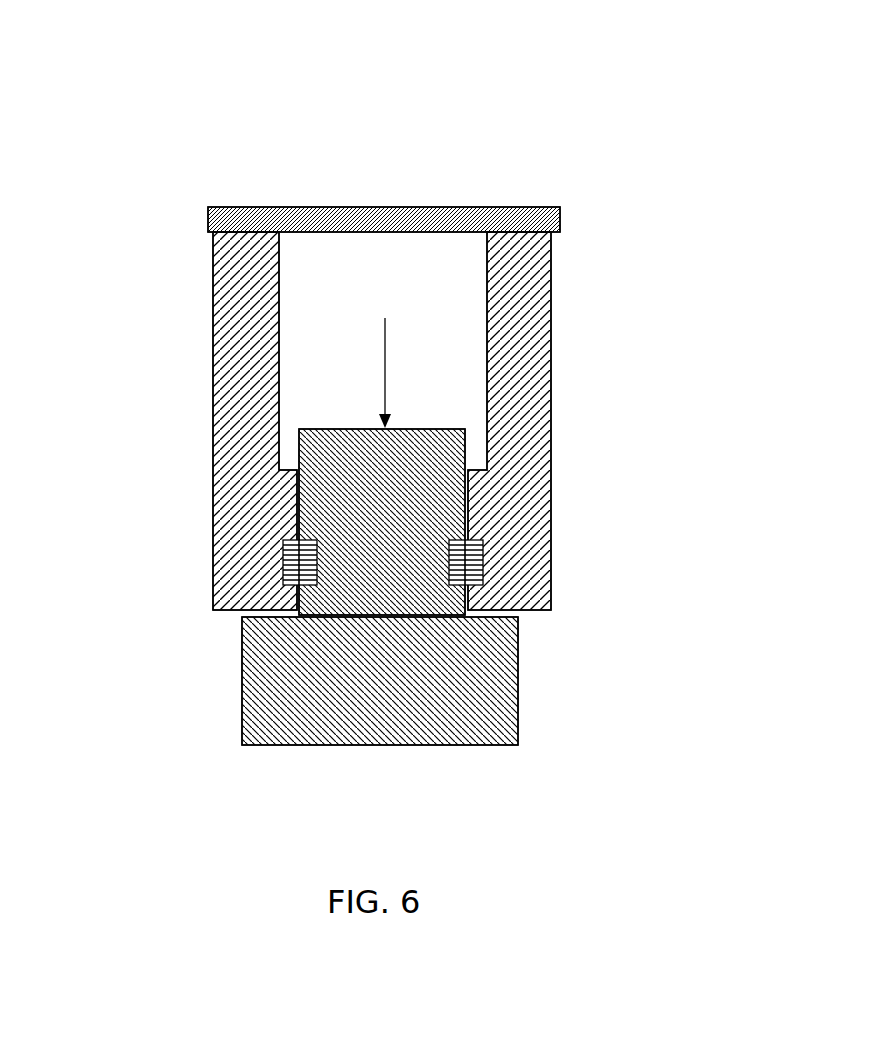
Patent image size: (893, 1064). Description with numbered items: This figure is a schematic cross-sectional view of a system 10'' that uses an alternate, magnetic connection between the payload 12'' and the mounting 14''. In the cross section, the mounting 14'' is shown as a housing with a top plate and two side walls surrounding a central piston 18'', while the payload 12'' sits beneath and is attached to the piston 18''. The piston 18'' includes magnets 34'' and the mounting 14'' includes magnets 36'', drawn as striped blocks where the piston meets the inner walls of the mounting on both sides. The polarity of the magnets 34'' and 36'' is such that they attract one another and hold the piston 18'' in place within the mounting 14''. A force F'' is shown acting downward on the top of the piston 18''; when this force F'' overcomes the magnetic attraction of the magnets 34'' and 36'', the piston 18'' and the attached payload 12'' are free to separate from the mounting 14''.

The system 10'' is at (401, 401).
The payload 12'' is at (461, 706).
The mounting 14'' is at (301, 408).
The piston 18'' is at (469, 478).
The magnets 34'' is at (462, 469).
The magnets 36'' is at (392, 553).
The force F'' is at (401, 372).